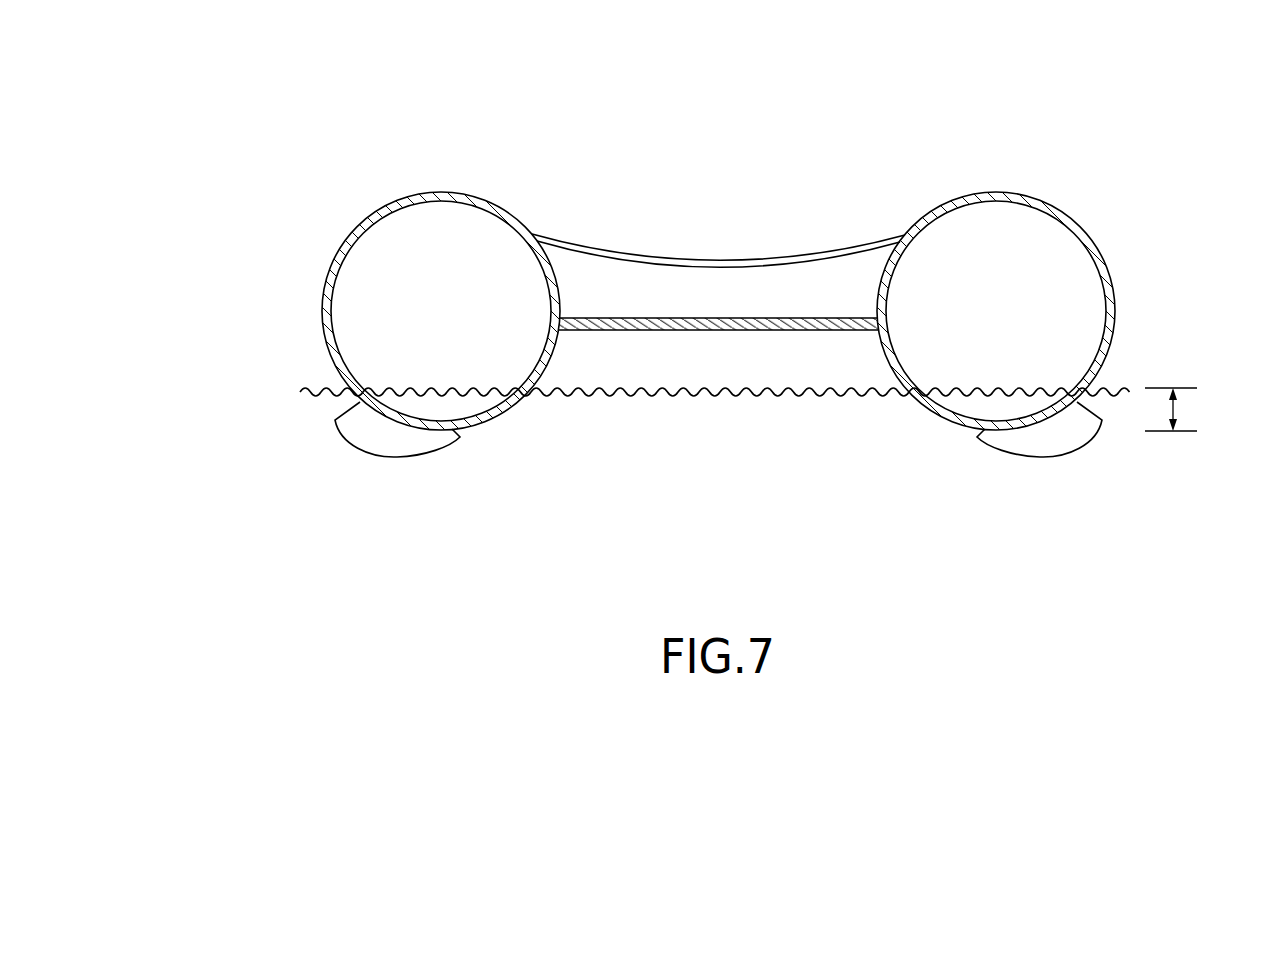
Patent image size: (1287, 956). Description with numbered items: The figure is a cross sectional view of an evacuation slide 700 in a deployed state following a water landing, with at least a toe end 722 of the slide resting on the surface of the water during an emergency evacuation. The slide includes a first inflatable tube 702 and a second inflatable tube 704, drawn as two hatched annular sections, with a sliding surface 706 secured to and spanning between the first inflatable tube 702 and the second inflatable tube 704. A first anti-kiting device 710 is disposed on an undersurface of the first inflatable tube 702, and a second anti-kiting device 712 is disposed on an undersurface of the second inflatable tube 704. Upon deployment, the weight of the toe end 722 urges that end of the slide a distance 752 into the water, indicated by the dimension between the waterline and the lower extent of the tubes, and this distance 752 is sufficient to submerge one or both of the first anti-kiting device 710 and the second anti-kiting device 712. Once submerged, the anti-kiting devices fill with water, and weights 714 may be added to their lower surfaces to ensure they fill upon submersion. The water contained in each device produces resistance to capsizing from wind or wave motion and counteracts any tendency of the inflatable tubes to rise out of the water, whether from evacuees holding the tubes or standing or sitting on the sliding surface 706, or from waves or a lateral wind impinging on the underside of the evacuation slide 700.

The evacuation slide 700 is at (312, 131).
The first inflatable tube 702 is at (342, 243).
The second inflatable tube 704 is at (1095, 245).
The sliding surface 706 is at (840, 247).
The first anti-kiting device 710 is at (340, 432).
The second anti-kiting device 712 is at (1093, 437).
The weights 714 is at (404, 457).
The toe end 722 is at (258, 323).
The distance 752 is at (1180, 402).